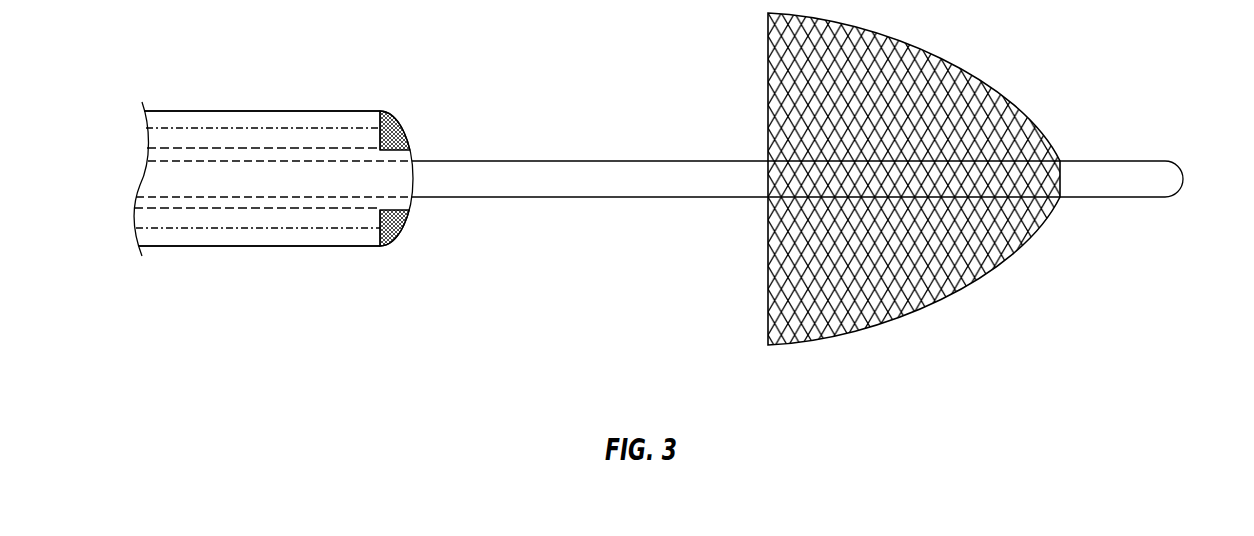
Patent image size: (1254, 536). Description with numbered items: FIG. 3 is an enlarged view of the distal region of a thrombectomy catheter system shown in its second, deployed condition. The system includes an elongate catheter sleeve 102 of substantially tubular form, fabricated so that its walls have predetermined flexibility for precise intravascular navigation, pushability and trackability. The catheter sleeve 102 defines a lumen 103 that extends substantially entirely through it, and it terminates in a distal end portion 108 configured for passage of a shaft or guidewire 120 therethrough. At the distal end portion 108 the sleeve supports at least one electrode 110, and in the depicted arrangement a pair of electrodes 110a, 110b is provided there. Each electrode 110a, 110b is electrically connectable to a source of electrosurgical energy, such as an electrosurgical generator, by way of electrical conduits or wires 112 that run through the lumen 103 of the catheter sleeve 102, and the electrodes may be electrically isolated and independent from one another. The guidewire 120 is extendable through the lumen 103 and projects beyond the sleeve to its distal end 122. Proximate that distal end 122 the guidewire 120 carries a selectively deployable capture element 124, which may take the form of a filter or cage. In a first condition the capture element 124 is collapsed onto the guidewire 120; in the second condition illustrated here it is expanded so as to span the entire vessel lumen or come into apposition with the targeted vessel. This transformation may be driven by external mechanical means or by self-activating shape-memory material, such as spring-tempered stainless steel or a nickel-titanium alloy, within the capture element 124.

The catheter sleeve 102 is at (181, 109).
The lumen 103 is at (162, 150).
The distal end portion 108 is at (323, 111).
The electrode 110 is at (402, 110).
The first electrode 110a is at (403, 124).
The second electrode 110b is at (405, 224).
The electrical conduits or wires 112 is at (238, 130).
The shaft or guidewire 120 is at (544, 163).
The distal end 122 is at (1165, 160).
The capture element 124 is at (904, 42).